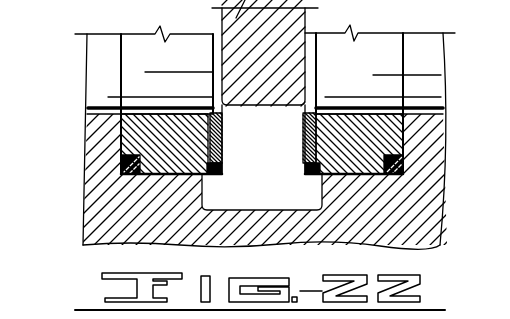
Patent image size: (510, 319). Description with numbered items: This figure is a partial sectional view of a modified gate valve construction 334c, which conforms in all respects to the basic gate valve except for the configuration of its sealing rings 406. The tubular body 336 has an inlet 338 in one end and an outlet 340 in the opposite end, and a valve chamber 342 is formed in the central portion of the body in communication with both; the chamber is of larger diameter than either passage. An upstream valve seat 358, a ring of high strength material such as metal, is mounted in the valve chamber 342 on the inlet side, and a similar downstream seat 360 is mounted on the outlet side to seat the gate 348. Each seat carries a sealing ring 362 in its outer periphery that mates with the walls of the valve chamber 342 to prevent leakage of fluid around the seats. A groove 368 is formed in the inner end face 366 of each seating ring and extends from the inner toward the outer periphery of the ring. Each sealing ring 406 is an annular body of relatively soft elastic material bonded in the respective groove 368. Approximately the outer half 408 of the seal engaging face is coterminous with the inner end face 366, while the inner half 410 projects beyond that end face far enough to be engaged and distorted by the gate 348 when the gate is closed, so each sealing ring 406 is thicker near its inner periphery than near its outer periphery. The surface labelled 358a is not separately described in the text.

The modified gate valve construction 334c is at (118, 26).
The tubular body 336 is at (105, 208).
The inlet 338 is at (200, 62).
The outlet 340 is at (430, 52).
The valve chamber 342 is at (280, 208).
The gate 348 is at (275, 44).
The upstream valve seat 358 is at (110, 132).
The layer surface 358a is at (509, 75).
The downstream seat 360 is at (388, 110).
The sealing ring 362 is at (118, 167).
The inner end face 366 is at (300, 170).
The groove 368 is at (200, 134).
The sealing ring 406 is at (303, 136).
The outer half of seal engaging face 408 is at (303, 156).
The inner half of sealing engagement face 410 is at (305, 118).